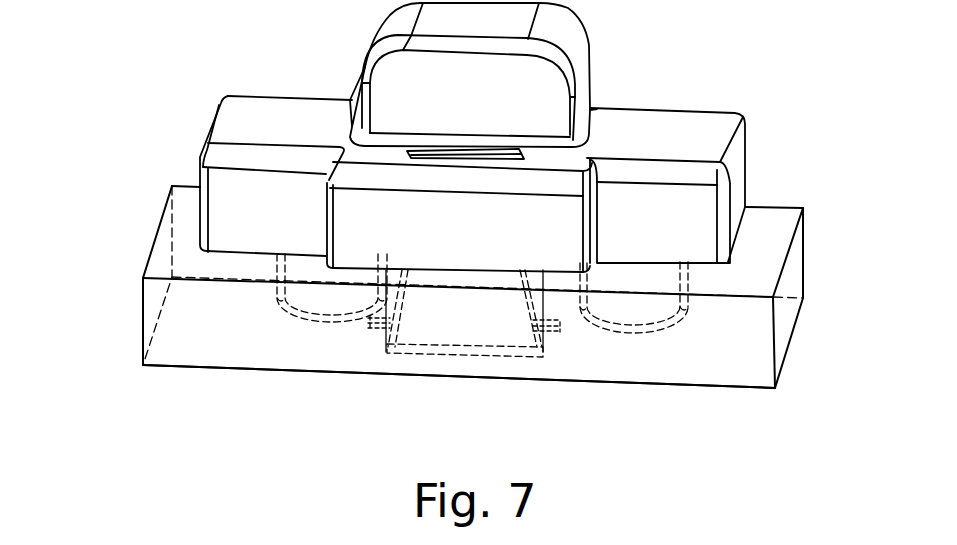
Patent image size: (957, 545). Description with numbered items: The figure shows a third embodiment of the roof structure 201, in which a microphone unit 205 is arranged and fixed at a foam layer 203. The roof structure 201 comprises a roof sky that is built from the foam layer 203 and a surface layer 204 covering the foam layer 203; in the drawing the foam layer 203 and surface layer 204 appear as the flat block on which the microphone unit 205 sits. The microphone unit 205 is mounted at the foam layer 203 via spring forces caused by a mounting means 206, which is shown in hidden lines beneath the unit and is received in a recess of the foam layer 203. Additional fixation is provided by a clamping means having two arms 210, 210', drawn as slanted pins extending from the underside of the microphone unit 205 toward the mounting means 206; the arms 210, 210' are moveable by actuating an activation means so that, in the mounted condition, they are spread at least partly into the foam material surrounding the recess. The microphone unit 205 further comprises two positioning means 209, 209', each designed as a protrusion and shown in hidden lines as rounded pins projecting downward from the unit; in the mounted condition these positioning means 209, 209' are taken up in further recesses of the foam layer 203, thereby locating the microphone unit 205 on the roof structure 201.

The roof structure 201 is at (454, 233).
The foam layer 203 is at (439, 312).
The surface layer 204 is at (178, 369).
The microphone unit 205 is at (618, 101).
The mounting means 206 is at (471, 326).
The positioning means 209 is at (308, 359).
The positioning means 209' is at (663, 363).
The arm 210 is at (358, 367).
The arm 210' is at (557, 367).